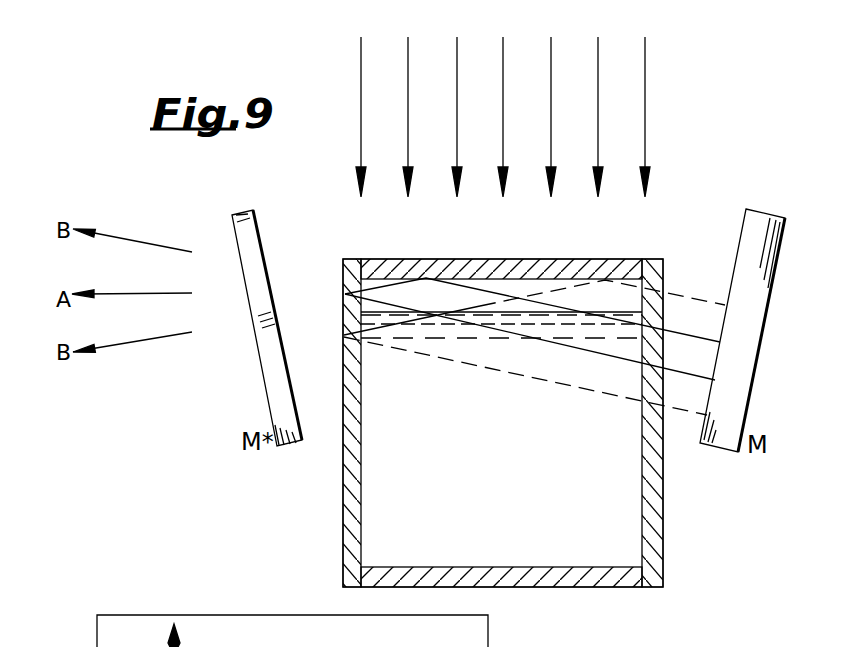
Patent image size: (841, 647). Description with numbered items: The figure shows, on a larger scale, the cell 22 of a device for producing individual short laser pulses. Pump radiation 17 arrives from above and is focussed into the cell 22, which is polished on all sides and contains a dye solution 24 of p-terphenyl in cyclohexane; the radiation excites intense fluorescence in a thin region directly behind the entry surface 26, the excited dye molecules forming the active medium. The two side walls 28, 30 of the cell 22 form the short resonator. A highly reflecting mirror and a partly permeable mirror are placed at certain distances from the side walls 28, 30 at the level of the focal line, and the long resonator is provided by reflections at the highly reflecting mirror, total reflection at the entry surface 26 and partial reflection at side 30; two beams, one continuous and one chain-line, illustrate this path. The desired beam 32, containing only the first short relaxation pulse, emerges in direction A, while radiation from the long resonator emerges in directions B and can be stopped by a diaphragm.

The remaining radiation 17 is at (658, 28).
The entry surface 26 is at (504, 281).
The side surface 30 is at (342, 505).
The side surface 28 is at (663, 527).
The cell 22 is at (574, 590).
The solution 24 is at (489, 538).
The desired beam 32 is at (155, 293).